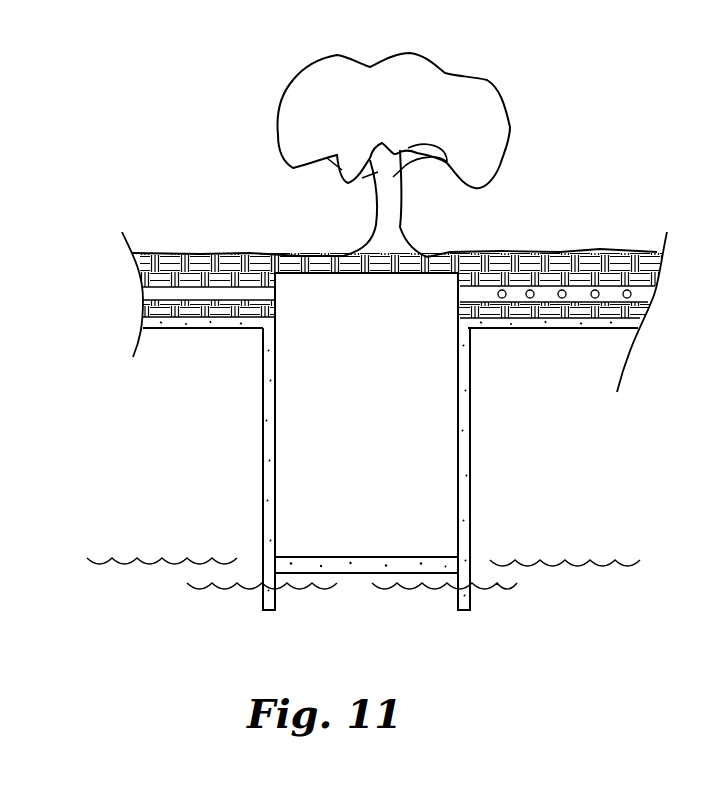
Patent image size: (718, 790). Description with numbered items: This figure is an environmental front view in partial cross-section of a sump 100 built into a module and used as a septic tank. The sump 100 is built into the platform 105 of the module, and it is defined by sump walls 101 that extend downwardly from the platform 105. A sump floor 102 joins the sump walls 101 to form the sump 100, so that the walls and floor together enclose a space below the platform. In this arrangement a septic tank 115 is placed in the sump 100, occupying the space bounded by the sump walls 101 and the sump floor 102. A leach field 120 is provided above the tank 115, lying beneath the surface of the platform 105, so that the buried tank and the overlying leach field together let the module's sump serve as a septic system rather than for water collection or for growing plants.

The sump 100 is at (542, 518).
The sump walls 101 is at (471, 472).
The sump floor 102 is at (357, 574).
The platform 105 is at (220, 328).
The septic tank 115 is at (380, 460).
The leach field 120 is at (656, 285).